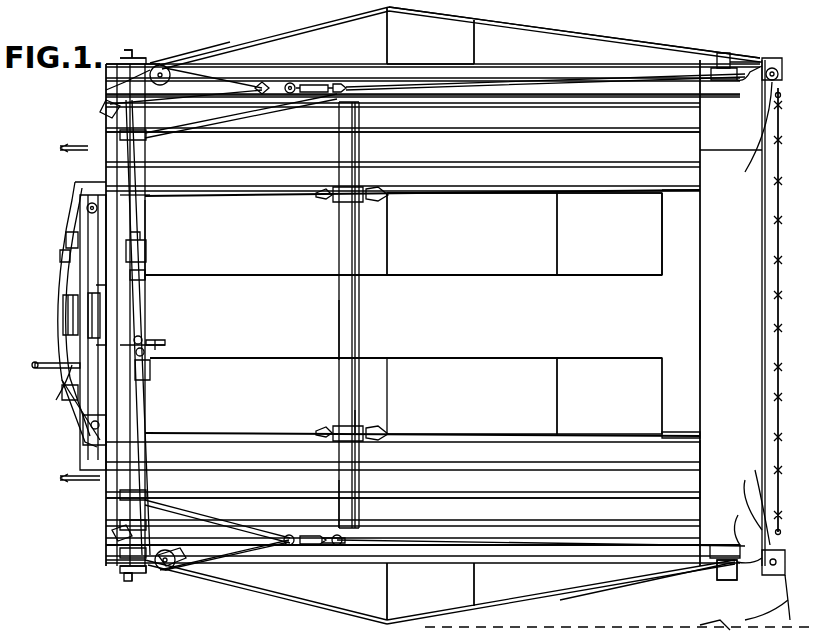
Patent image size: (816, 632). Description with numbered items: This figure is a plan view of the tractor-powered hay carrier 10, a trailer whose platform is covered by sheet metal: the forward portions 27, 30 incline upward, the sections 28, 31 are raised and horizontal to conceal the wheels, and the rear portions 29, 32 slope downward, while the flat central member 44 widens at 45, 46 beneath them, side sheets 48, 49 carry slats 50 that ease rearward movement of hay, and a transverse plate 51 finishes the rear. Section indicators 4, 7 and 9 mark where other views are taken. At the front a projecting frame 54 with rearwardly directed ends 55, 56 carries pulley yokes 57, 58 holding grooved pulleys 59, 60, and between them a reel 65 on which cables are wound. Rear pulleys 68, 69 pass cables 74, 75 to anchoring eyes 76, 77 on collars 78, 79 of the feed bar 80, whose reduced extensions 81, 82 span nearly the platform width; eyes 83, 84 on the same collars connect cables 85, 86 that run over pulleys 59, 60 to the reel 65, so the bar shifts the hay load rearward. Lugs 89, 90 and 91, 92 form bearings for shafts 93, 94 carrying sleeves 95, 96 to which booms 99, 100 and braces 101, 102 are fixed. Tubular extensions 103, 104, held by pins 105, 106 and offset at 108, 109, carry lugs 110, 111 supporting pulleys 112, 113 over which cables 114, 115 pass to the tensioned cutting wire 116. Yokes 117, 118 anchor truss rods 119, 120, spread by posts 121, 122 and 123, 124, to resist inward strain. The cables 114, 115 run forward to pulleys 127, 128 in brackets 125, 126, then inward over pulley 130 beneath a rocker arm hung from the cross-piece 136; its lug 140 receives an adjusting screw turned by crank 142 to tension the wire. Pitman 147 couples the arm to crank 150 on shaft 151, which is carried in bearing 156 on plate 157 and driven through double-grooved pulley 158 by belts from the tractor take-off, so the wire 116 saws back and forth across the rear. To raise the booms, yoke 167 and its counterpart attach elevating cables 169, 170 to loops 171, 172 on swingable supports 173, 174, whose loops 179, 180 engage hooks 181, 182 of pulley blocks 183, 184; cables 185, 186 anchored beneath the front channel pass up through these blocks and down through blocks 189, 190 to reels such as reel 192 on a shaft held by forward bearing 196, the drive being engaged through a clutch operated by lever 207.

The section line 4 is at (63, 147).
The section line 7 is at (181, 380).
The section line 9 is at (746, 535).
The hay carrier 10 is at (150, 345).
The sheet metal platform member 27 is at (270, 396).
The sheet metal platform member 28 is at (482, 413).
The rear plate portion 29 is at (598, 418).
The sheet metal platform member 30 is at (282, 272).
The sheet metal platform member 31 is at (444, 262).
The rear plate portion 32 is at (600, 250).
The sheet metal member 44 is at (460, 318).
The widened portion 45 is at (677, 396).
The widened portion 46 is at (685, 242).
The metal sheet 48 is at (700, 470).
The metal sheet 49 is at (690, 152).
The slats 50 is at (592, 500).
The transverse sheet metal plate 51 is at (700, 327).
The forwardly-extending frame 54 is at (60, 282).
The end of frame 55 is at (97, 450).
The end of frame 56 is at (88, 190).
The pulley yoke 57 is at (80, 448).
The pulley yoke 58 is at (100, 188).
The grooved pulley 59 is at (86, 440).
The grooved pulley 60 is at (75, 192).
The reel 65 is at (66, 330).
The rear pulley 68 is at (690, 436).
The rear pulley 69 is at (680, 200).
The cable 74 is at (508, 434).
The cable 75 is at (508, 236).
The anchoring eye 76 is at (372, 428).
The anchoring eye 77 is at (372, 203).
The ring or collar 78 is at (357, 410).
The ring or collar 79 is at (333, 222).
The transverse bar 80 is at (339, 325).
The reduced portion 81 is at (359, 513).
The reduced portion 82 is at (360, 150).
The forwardly-directed eye 83 is at (334, 432).
The forwardly-directed eye 84 is at (337, 203).
The cable 85 is at (282, 420).
The cable 86 is at (422, 207).
The upright lug 89 is at (128, 576).
The upright lug 90 is at (118, 58).
The lug 91 is at (148, 494).
The lug 92 is at (140, 140).
The shaft 93 is at (134, 583).
The shaft 94 is at (130, 54).
The sleeve 95 is at (120, 566).
The sleeve 96 is at (125, 72).
The boom 99 is at (238, 550).
The boom 100 is at (428, 64).
The stay or brace 101 is at (240, 518).
The stay or brace 102 is at (212, 119).
The tubular extension 103 is at (752, 500).
The tubular extension 104 is at (740, 110).
The transverse pin 105 is at (730, 520).
The transverse pin 106 is at (730, 92).
The offset 108 is at (784, 580).
The offset 109 is at (768, 58).
The corner plate 110 is at (705, 622).
The lug 111 is at (772, 66).
The grooved pulley 112 is at (760, 480).
The grooved pulley 113 is at (760, 165).
The cable 114 is at (748, 578).
The cable 115 is at (148, 229).
The saw wire 116 is at (778, 348).
The U-shaped yoke 117 is at (728, 568).
The U-shaped yoke 118 is at (722, 53).
The truss rod 119 is at (610, 585).
The truss rod 120 is at (630, 44).
The post 121 is at (480, 583).
The post 122 is at (395, 597).
The post 123 is at (480, 50).
The post 124 is at (398, 29).
The pulley bracket 125 is at (176, 570).
The pulley bracket 126 is at (170, 62).
The grooved pulley 127 is at (170, 570).
The grooved pulley 128 is at (172, 58).
The pulley 130 is at (146, 338).
The cross-piece 136 is at (150, 214).
The lug 140 is at (150, 338).
The crank 142 is at (170, 348).
The pitman 147 is at (145, 290).
The crank 150 is at (150, 263).
The shaft 151 is at (145, 244).
The bearing 156 is at (66, 240).
The supporting plate 157 is at (60, 256).
The double-grooved pulley 158 is at (86, 210).
The attachment yoke 167 is at (656, 625).
The elevating cable 169 is at (486, 538).
The elevating cable 170 is at (468, 98).
The ring or loop 171 is at (345, 545).
The ring or loop 172 is at (344, 82).
The swingable support 173 is at (336, 548).
The swingable support 174 is at (334, 82).
The ring or loop 179 is at (308, 548).
The ring or loop 180 is at (296, 82).
The upper hook 181 is at (280, 566).
The upper hook 182 is at (272, 60).
The pulley block 183 is at (292, 548).
The pulley block 184 is at (268, 82).
The cable 185 is at (120, 552).
The cable 186 is at (118, 132).
The block 189 is at (112, 534).
The block 190 is at (105, 108).
The reel 192 is at (150, 400).
The forward bearing 196 is at (62, 400).
The lever 207 is at (48, 400).